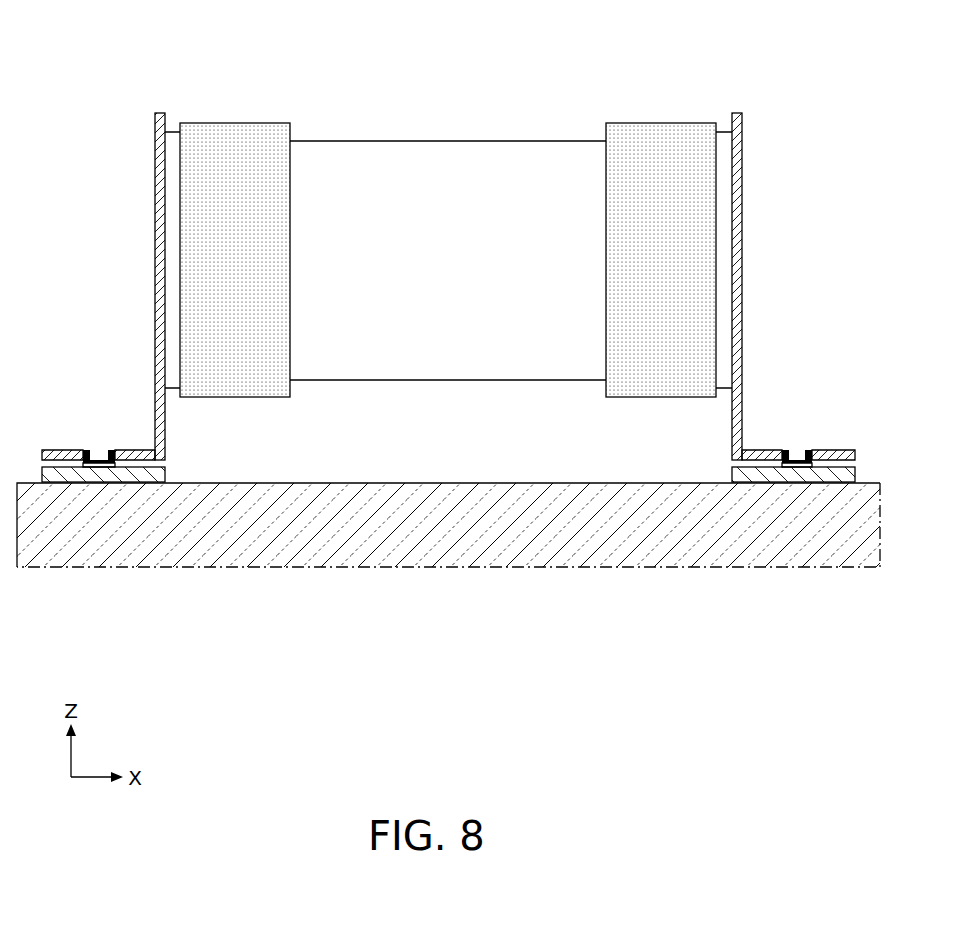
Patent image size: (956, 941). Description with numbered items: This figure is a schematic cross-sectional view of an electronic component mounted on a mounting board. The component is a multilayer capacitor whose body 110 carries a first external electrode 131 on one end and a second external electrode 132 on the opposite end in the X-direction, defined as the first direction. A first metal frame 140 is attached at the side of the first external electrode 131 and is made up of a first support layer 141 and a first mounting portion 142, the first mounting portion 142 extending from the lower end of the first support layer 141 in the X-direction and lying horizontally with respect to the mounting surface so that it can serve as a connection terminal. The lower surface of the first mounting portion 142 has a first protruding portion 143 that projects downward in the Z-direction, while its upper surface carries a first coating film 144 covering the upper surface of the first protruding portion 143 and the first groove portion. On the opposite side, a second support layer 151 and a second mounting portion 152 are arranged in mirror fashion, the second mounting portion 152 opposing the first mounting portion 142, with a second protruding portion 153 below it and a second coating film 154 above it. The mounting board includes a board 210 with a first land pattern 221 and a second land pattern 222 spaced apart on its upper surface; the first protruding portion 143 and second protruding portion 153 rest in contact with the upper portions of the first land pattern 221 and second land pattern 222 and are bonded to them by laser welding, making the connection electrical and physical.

The body 110 is at (453, 141).
The first external electrode 131 is at (233, 122).
The second external electrode 132 is at (660, 122).
The first metal frame 140 is at (102, 371).
The first support layer 141 is at (170, 332).
The first mounting portion 142 is at (70, 450).
The first protruding portion 143 is at (97, 464).
The first coating film 144 is at (110, 450).
The second support layer 151 is at (727, 332).
The second mounting portion 152 is at (826, 450).
The second protruding portion 153 is at (800, 470).
The second coating film 154 is at (787, 450).
The board 210 is at (453, 530).
The first land pattern 221 is at (105, 473).
The second land pattern 222 is at (773, 478).